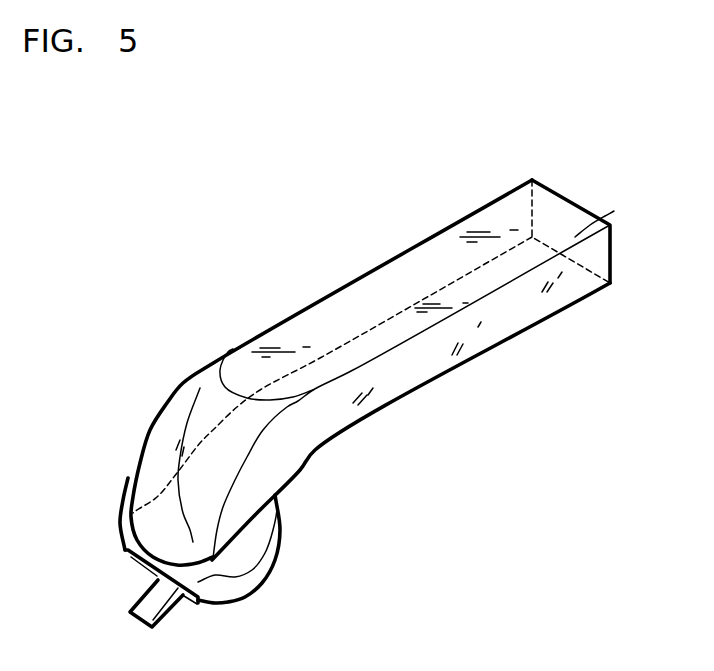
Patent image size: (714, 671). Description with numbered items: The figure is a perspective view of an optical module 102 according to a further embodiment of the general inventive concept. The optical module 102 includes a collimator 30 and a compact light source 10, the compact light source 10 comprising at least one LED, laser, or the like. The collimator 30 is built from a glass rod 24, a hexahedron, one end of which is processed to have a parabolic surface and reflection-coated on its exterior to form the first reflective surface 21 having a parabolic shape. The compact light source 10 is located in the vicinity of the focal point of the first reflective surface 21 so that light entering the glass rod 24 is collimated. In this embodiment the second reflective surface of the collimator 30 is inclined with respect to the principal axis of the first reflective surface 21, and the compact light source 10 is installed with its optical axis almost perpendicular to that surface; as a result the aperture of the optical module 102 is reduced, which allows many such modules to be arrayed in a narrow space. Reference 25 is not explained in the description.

The optical module 102 is at (395, 359).
The collimator 30 is at (404, 242).
The light emitting end surface 25 is at (616, 211).
The glass rod 24 is at (310, 320).
The first reflective surface 21 is at (190, 403).
The compact light source 10 is at (250, 565).